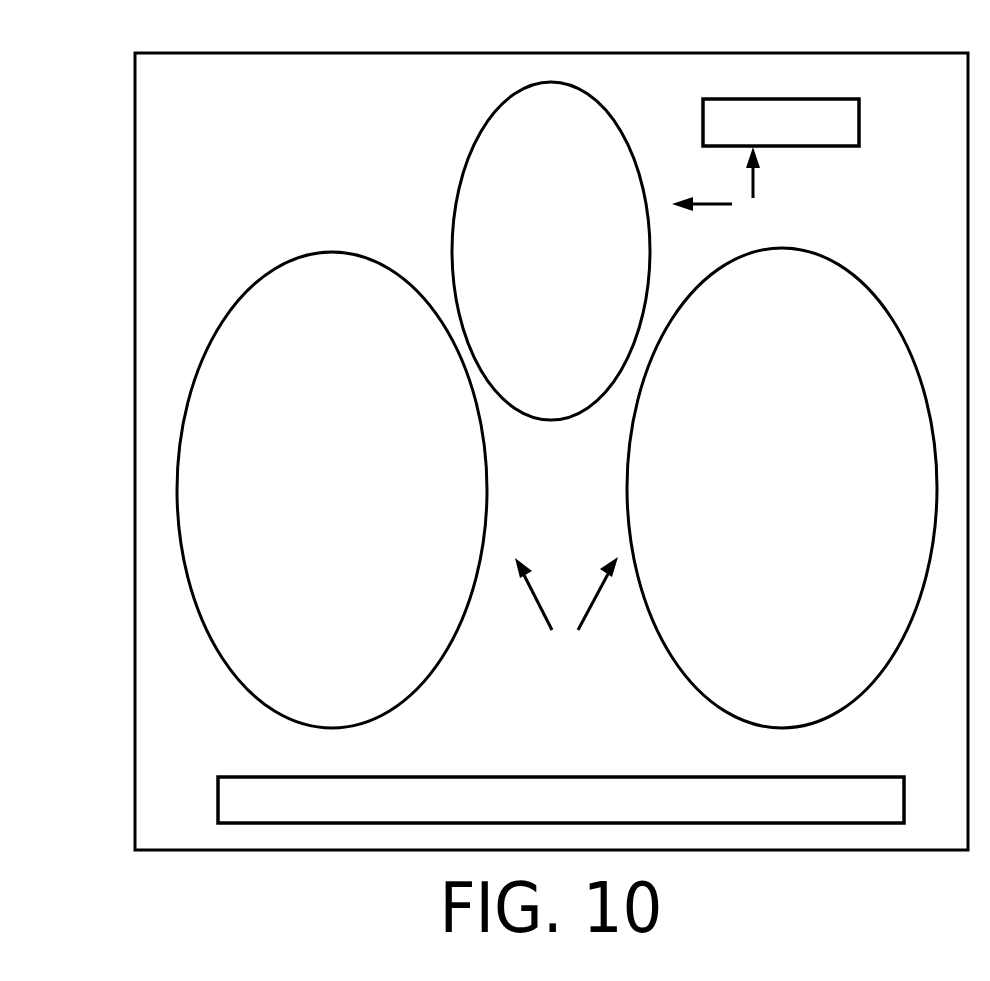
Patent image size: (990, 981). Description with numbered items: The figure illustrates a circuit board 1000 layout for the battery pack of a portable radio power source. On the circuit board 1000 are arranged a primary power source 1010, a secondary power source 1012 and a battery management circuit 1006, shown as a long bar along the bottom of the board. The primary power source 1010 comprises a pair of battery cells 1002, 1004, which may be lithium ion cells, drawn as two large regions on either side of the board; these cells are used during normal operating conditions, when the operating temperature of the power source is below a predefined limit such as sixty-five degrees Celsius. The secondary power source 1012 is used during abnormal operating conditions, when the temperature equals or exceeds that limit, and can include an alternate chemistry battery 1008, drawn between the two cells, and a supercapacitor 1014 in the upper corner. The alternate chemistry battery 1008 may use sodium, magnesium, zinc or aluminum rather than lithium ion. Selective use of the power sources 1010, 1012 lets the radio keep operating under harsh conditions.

The circuit board 1000 is at (84, 55).
The battery cell 1002 is at (332, 490).
The battery cell 1004 is at (782, 488).
The battery management circuit 1006 is at (561, 800).
The alternate chemistry battery 1008 is at (551, 251).
The primary power source 1010 is at (566, 614).
The secondary power source 1012 is at (729, 183).
The supercapacitor 1014 is at (781, 122).